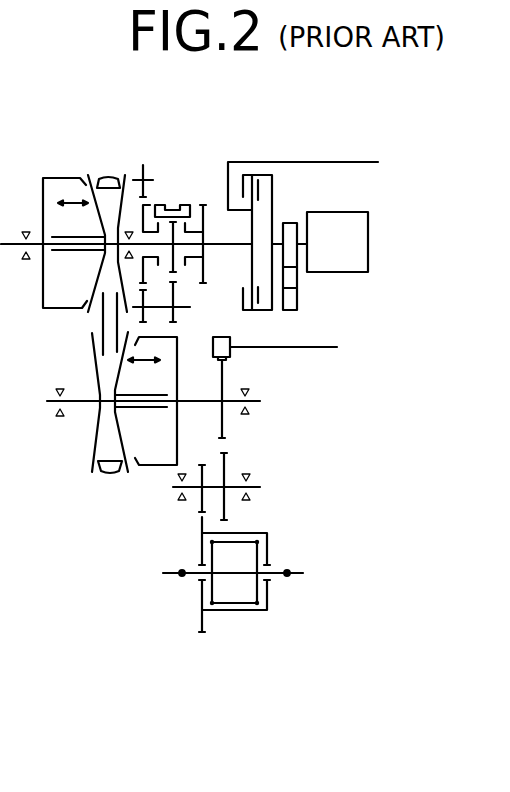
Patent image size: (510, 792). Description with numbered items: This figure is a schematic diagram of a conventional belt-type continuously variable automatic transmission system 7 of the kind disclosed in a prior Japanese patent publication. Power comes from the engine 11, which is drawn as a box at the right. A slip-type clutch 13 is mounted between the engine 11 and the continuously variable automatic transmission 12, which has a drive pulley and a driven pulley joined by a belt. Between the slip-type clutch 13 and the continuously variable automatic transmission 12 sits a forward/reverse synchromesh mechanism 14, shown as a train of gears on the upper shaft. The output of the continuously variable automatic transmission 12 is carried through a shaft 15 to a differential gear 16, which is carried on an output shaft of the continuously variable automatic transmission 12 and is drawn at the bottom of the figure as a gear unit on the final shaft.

The continuously variable transmission (prior art) 7 is at (0, 65).
The engine 11 is at (342, 272).
The continuously variable automatic transmission 12 is at (88, 352).
The slip-type clutch 13 is at (260, 313).
The forward/reverse synchromesh mechanism 14 is at (187, 198).
The intermediate shaft 15 is at (232, 403).
The differential gear 16 is at (267, 600).